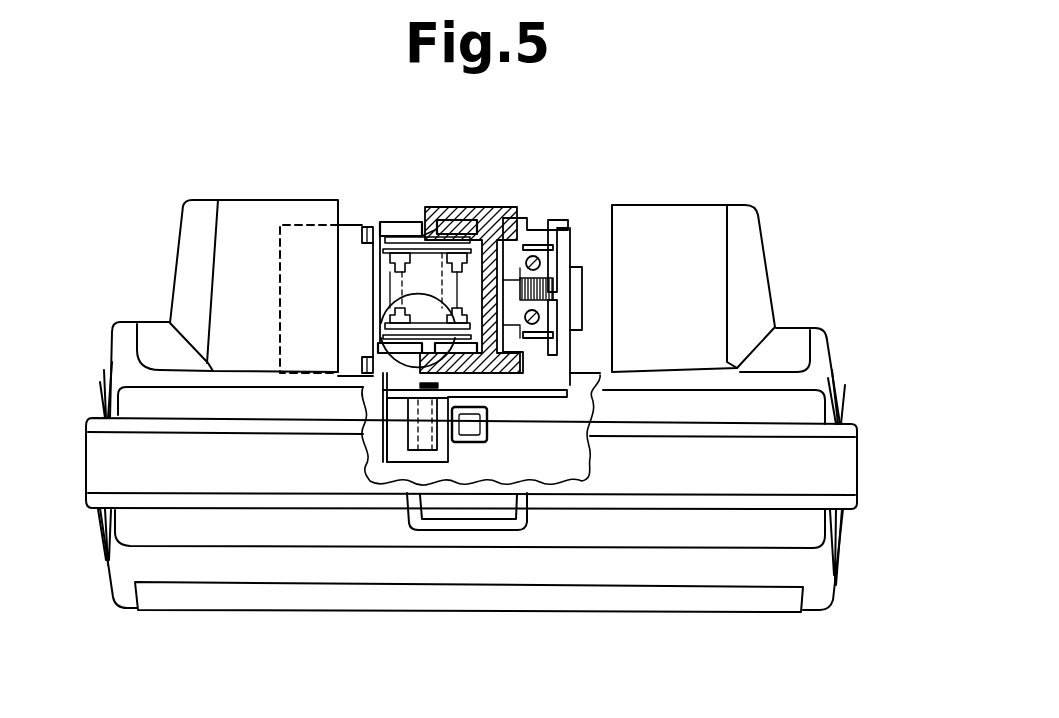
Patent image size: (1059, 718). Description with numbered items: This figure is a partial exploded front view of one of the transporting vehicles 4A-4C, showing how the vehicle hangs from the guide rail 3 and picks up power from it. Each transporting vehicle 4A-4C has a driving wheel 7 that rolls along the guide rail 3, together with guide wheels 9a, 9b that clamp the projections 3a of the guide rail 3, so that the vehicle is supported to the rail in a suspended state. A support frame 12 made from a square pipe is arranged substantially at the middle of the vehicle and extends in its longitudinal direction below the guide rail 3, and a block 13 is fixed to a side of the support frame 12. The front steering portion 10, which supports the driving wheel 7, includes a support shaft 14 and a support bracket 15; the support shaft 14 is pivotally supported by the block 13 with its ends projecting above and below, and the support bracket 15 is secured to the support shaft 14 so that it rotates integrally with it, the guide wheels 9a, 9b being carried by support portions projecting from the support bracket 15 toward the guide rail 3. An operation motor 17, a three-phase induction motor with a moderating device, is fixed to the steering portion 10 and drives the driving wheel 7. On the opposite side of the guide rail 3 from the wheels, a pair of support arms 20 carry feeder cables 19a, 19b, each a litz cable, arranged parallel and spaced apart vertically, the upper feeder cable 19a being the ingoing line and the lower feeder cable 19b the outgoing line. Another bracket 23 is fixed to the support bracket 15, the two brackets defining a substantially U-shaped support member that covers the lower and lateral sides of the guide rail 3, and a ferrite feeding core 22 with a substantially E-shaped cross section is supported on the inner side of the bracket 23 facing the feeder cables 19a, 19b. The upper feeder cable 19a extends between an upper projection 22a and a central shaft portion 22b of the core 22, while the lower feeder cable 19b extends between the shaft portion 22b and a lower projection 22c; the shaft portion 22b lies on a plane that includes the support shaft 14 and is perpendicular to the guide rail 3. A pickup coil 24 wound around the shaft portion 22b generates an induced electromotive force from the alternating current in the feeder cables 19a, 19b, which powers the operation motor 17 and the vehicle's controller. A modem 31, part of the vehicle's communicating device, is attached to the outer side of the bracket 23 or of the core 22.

The guide rail 3 is at (477, 211).
The projections of the guide rail 3a is at (427, 238).
The driving wheel 7 is at (386, 246).
The guide wheel 9a is at (398, 222).
The guide wheel 9b is at (378, 400).
The steering portion 10 is at (413, 468).
The support frame 12 is at (490, 444).
The block 13 is at (408, 462).
The support shaft 14 is at (447, 478).
The support bracket 15 is at (383, 452).
The operation motor 17 is at (348, 228).
The feeder cable 19a is at (557, 255).
The feeder cable 19b is at (557, 305).
The support arms 20 is at (527, 257).
The feeding core 22 is at (569, 233).
The upper projection 22a is at (546, 230).
The shaft portion 22b is at (505, 220).
The lower projection 22c is at (575, 372).
The bracket 23 is at (592, 400).
The pickup coil 24 is at (553, 290).
The modem 31 is at (588, 316).
The transporting vehicles 4A-4C is at (792, 294).